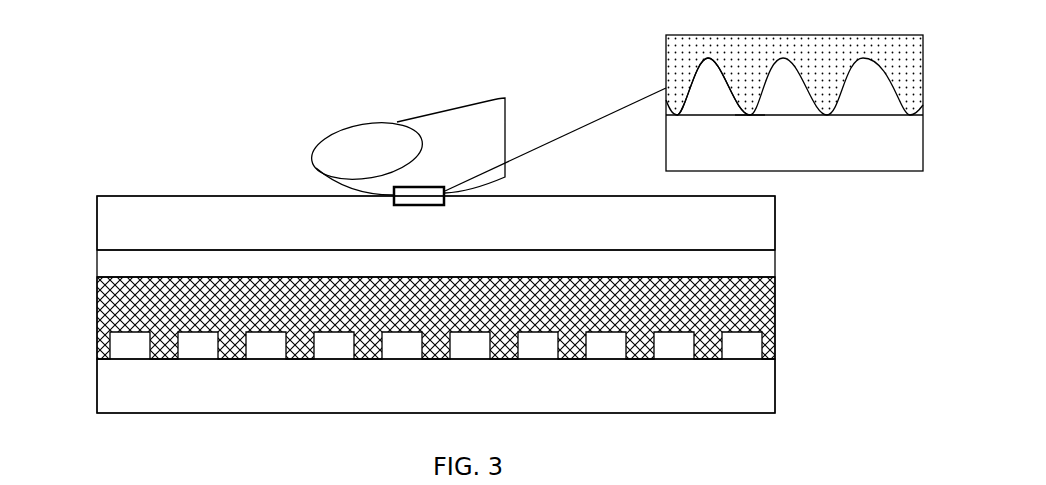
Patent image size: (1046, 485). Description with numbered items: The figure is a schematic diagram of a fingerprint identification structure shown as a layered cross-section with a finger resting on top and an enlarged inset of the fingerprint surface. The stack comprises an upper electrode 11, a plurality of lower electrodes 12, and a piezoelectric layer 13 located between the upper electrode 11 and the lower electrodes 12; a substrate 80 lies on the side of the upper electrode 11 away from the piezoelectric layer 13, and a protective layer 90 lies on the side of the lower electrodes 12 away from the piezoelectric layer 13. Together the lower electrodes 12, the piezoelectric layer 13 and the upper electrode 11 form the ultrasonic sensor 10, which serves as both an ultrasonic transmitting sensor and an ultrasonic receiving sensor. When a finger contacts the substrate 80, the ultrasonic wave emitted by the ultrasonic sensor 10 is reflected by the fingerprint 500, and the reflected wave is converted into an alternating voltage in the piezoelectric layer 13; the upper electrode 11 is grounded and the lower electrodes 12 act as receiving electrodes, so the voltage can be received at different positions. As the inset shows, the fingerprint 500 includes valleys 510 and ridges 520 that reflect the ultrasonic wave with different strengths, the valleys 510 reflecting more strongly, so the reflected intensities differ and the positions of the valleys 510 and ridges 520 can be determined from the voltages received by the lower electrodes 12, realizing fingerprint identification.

The ultrasonic sensor 10 is at (42, 258).
The upper electrode 11 is at (125, 264).
The lower electrodes 12 is at (115, 345).
The piezoelectric layer 13 is at (120, 305).
The substrate 80 is at (115, 223).
The protective layer 90 is at (115, 392).
The fingerprint 500 is at (853, 45).
The valleys 510 is at (702, 84).
The ridges 520 is at (753, 102).